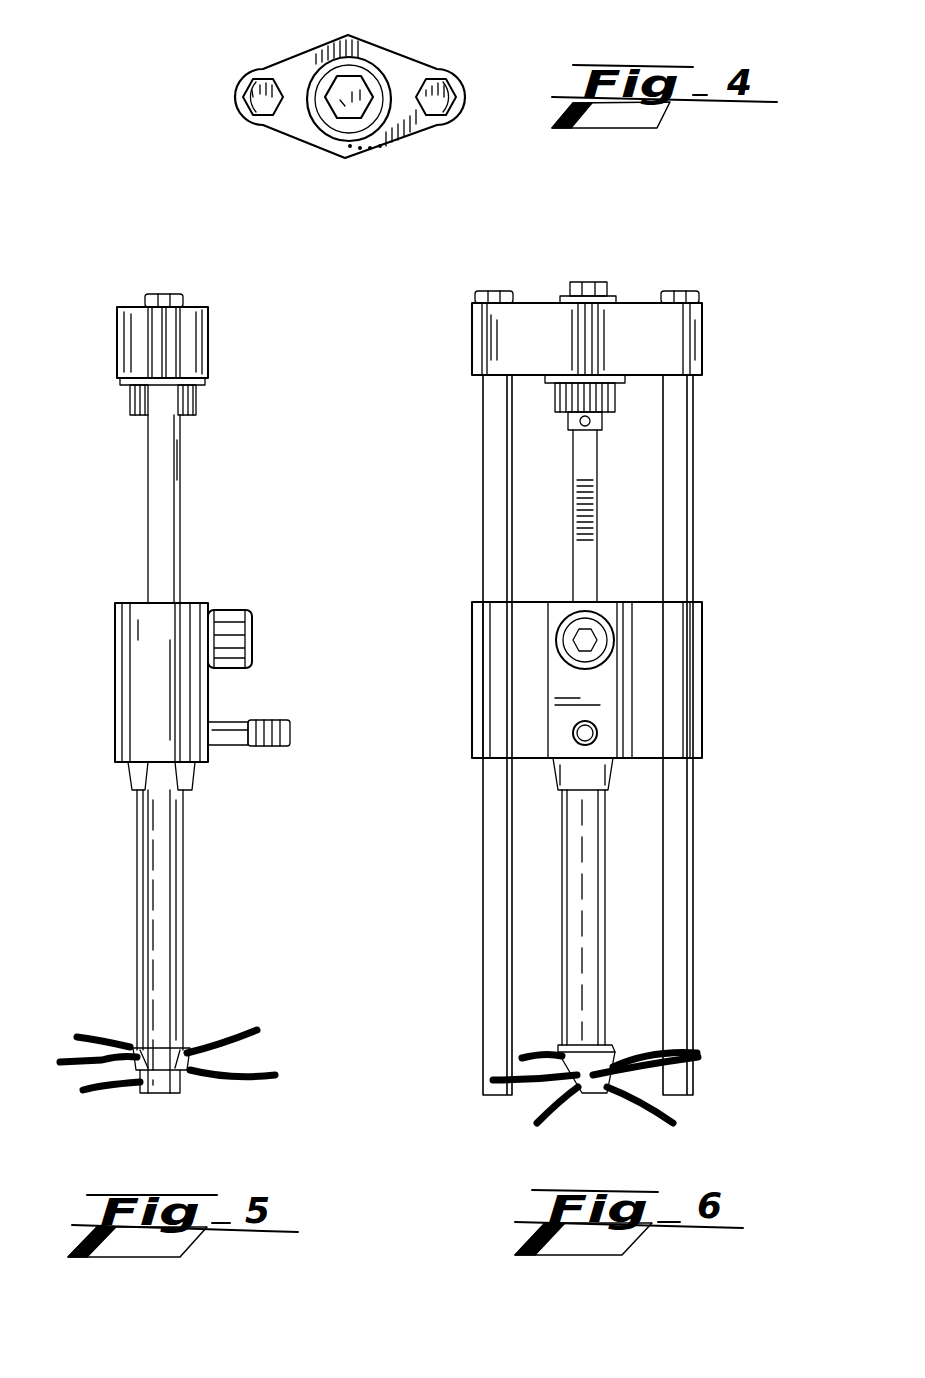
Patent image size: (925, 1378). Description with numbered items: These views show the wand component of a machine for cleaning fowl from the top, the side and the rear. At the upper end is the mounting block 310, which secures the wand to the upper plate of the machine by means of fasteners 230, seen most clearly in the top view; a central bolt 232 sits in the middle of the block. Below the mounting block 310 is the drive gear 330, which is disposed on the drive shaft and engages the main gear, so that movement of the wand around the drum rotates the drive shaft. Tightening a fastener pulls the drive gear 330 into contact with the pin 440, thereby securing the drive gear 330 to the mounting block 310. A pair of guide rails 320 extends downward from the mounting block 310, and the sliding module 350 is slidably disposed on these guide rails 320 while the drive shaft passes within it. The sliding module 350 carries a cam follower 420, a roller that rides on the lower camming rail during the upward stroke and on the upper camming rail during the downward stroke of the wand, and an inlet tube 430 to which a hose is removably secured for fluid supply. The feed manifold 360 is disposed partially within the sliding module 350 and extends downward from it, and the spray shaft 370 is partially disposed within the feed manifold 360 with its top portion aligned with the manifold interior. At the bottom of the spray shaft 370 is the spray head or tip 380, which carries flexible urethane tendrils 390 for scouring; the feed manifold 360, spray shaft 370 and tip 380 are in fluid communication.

In FIG. 4, the fasteners 230 is at (438, 108).
In FIG. 6, the fasteners 230 is at (675, 291).
In FIG. 4, the central bolt 232 is at (362, 90).
In FIG. 6, the central bolt 232 is at (580, 282).
In FIG. 4, the mounting block 310 is at (357, 150).
In FIG. 5, the mounting block 310 is at (192, 322).
In FIG. 6, the mounting block 310 is at (690, 328).
In FIG. 5, the guide rails 320 is at (162, 880).
In FIG. 6, the guide rails 320 is at (693, 822).
In FIG. 5, the drive gear 330 is at (200, 388).
In FIG. 6, the drive gear 330 is at (555, 393).
In FIG. 6, the sliding module 350 is at (678, 700).
In FIG. 5, the feed manifold 360 is at (125, 778).
In FIG. 6, the feed manifold 360 is at (553, 770).
In FIG. 5, the spray shaft 370 is at (185, 938).
In FIG. 6, the spray shaft 370 is at (584, 882).
In FIG. 5, the spray head or tip 380 is at (130, 1045).
In FIG. 6, the spray head or tip 380 is at (584, 1095).
In FIG. 5, the brushes or tendrils 390 is at (112, 1097).
In FIG. 6, the brushes or tendrils 390 is at (632, 1047).
In FIG. 5, the cam follower 420 is at (227, 605).
In FIG. 6, the cam follower 420 is at (558, 642).
In FIG. 5, the inlet tube 430 is at (232, 748).
In FIG. 6, the inlet tube 430 is at (578, 730).
In FIG. 6, the pin 440 is at (590, 425).